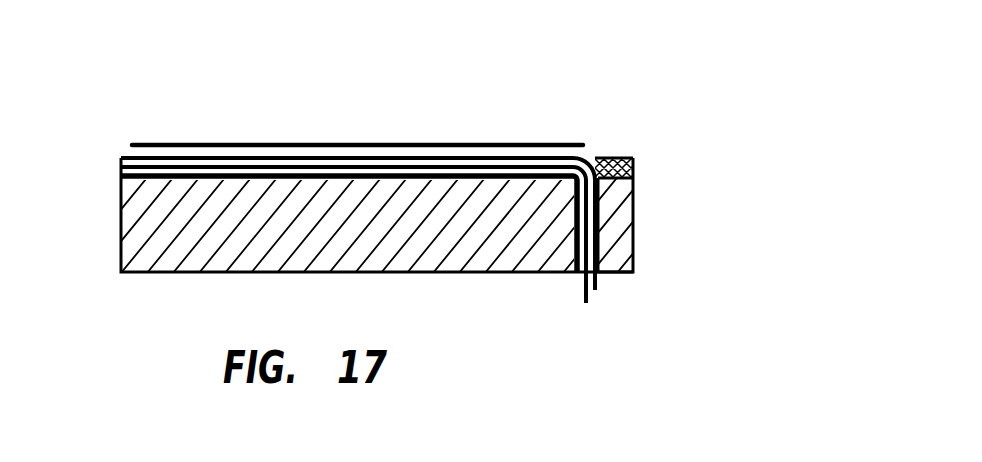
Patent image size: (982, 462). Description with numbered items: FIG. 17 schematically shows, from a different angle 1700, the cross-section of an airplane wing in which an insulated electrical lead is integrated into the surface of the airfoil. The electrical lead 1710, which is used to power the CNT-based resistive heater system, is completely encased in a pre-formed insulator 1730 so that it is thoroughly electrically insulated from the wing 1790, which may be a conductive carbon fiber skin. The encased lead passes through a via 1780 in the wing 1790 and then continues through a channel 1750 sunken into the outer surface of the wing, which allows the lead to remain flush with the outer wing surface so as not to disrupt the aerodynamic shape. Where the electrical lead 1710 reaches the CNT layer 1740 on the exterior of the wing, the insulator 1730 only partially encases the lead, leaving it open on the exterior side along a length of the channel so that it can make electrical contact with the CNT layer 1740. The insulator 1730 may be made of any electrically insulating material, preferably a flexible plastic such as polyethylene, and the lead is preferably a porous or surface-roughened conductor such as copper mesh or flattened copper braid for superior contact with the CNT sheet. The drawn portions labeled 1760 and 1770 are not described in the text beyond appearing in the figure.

The angle 1700 is at (143, 118).
The electrical lead 1710 is at (587, 306).
The insulator 1730 is at (574, 277).
The CNT layer 1740 is at (357, 141).
The channel 1750 is at (591, 157).
The substrate portion 1760 is at (634, 274).
The sealing member 1770 is at (636, 158).
The via 1780 is at (600, 258).
The wing 1790 is at (215, 244).